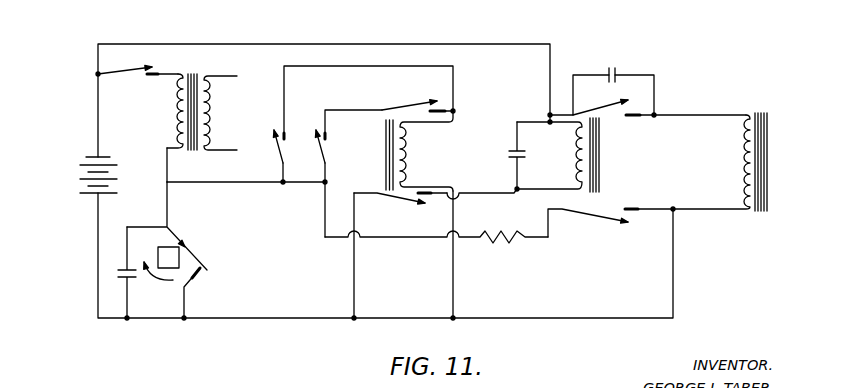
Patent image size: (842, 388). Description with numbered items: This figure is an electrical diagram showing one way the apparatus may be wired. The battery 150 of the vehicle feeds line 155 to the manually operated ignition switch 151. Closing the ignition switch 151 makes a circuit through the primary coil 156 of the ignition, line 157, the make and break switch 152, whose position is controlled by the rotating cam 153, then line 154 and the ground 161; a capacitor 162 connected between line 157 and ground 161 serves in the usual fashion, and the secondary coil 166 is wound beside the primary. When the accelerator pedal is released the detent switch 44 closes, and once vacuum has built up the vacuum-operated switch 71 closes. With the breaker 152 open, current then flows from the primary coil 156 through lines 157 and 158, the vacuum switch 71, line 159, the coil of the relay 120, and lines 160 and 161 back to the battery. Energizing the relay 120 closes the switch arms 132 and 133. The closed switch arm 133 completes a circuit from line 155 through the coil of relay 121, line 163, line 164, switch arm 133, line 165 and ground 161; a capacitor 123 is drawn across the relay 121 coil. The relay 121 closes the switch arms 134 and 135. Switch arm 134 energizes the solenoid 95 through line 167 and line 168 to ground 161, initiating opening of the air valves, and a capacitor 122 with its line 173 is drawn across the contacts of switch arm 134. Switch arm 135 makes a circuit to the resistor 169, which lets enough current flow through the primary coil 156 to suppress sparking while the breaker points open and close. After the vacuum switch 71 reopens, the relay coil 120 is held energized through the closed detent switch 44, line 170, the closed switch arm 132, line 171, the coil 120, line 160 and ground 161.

The detent switch 44 is at (318, 141).
The vacuum-operated switch 71 is at (275, 146).
The solenoid 95 is at (748, 163).
The relay 120 is at (388, 151).
The relay 121 is at (597, 156).
The capacitor 122 is at (616, 69).
The capacitor 123 is at (514, 150).
The switch arm 132 is at (418, 105).
The switch arm 133 is at (402, 200).
The switch arm 134 is at (604, 107).
The switch arm 135 is at (598, 219).
The battery 150 is at (86, 170).
The ignition switch 151 is at (125, 71).
The make and break switch 152 is at (201, 259).
The rotating cam 153 is at (166, 248).
The line 154 is at (191, 283).
The line 155 is at (476, 42).
The primary coil 156 is at (173, 113).
The line 157 is at (167, 165).
The line 158 is at (254, 183).
The line 159 is at (284, 84).
The line 160 is at (455, 281).
The ground 161 is at (98, 254).
The capacitor 162 is at (136, 268).
The line 163 is at (521, 189).
The line 164 is at (484, 194).
The line 165 is at (356, 281).
The secondary coil 166 is at (216, 106).
The line 167 is at (558, 112).
The line 168 is at (701, 113).
The resistor 169 is at (515, 242).
The line 170 is at (356, 110).
The line 171 is at (456, 108).
The conductor 173 is at (656, 86).